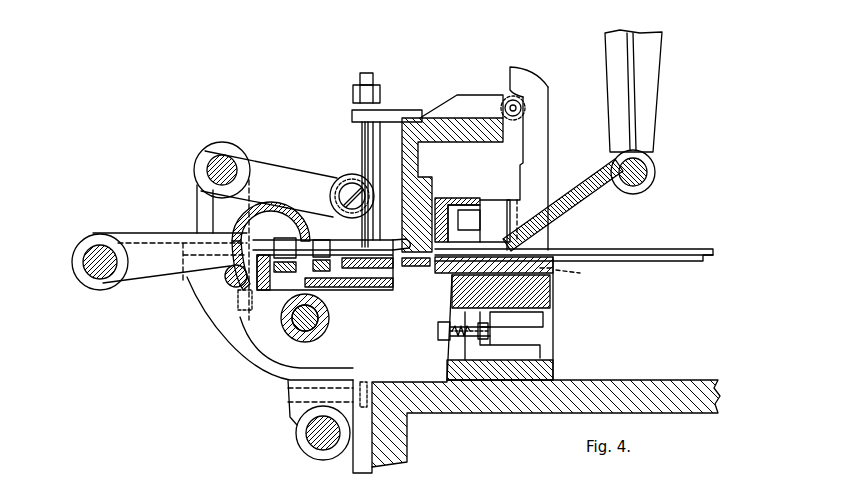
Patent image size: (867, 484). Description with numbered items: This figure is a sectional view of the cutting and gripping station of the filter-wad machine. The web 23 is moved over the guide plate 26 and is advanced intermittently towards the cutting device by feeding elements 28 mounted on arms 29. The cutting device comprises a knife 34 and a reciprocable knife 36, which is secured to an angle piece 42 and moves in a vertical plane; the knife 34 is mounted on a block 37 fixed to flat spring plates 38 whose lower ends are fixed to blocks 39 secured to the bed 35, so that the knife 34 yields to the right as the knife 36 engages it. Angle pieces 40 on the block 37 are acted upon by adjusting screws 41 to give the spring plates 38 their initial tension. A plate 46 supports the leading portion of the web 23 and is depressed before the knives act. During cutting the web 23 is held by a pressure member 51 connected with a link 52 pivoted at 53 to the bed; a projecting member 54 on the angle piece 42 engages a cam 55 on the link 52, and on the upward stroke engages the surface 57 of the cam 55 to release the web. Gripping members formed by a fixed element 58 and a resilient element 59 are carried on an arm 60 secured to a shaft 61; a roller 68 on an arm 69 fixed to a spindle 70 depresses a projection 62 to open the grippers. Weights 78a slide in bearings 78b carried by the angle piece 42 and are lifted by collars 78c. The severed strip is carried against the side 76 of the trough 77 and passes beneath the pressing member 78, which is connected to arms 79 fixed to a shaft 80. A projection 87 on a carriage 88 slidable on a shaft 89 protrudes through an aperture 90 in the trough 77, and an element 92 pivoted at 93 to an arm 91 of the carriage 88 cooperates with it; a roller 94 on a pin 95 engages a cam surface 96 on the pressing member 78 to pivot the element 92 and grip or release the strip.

The arms 29 is at (647, 62).
The link 52 is at (555, 247).
The projecting member 54 is at (486, 98).
The cam 55 is at (523, 72).
The surface of the cam 57 is at (524, 98).
The angle piece 42 is at (474, 102).
The knife 36 is at (426, 182).
The collars 78c is at (380, 93).
The bearings 78b is at (405, 112).
The weights 78a is at (363, 137).
The fixed element 58 is at (376, 215).
The spindle 70 is at (213, 157).
The arm 69 is at (260, 162).
The roller 68 is at (349, 184).
The projection 62 is at (337, 192).
The pressure member 51 is at (450, 198).
The knife 34 is at (462, 266).
The feeding elements 28 is at (506, 240).
The web 23 is at (664, 250).
The guide plate 26 is at (638, 257).
The side of the trough 76 is at (200, 237).
The arms 79 is at (142, 253).
The shaft 80 is at (97, 250).
The cam surface 96 is at (247, 227).
The pivot 93 is at (230, 281).
The pin 95 is at (283, 238).
The roller 94 is at (309, 240).
The pressing member 78 is at (303, 254).
The resilient element 59 is at (385, 246).
The aperture 90 is at (352, 284).
The element 92 is at (275, 292).
The projection 87 is at (328, 285).
The trough 77 is at (381, 293).
The shaft 89 is at (324, 340).
The arm 60 is at (224, 312).
The arm 91 is at (243, 313).
The carriage 88 is at (250, 340).
The shaft 61 is at (303, 427).
The pivot 53 is at (570, 273).
The spring plates 38 is at (553, 287).
The block 37 is at (553, 303).
The angle pieces 40 is at (543, 317).
The adjusting screws 41 is at (440, 338).
The plate 46 is at (427, 268).
The blocks 39 is at (541, 372).
The bed 35 is at (653, 393).